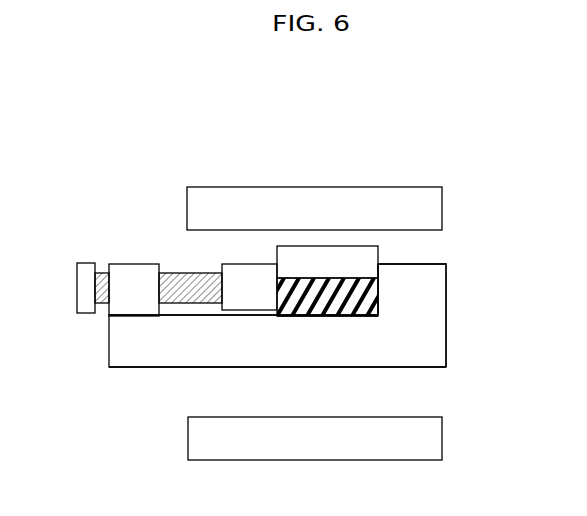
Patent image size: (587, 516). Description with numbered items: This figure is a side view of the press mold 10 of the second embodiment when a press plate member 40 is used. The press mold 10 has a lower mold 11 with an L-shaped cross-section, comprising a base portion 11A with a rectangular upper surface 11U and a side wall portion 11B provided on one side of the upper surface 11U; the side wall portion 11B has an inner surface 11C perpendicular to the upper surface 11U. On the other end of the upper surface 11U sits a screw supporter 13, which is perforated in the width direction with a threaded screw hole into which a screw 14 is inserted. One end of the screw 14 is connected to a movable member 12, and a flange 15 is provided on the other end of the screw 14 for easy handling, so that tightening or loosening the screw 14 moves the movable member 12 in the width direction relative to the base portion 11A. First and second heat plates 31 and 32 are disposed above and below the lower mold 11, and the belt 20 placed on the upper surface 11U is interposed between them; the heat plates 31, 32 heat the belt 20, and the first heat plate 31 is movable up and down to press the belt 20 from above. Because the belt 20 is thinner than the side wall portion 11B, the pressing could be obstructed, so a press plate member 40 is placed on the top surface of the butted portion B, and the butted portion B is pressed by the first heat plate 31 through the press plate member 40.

The press mold 10 is at (470, 158).
The lower mold 11 is at (125, 375).
The base portion 11A is at (195, 343).
The side wall portion 11B is at (413, 283).
The inner surface 11C is at (372, 305).
The upper surface 11U is at (188, 315).
The movable member 12 is at (248, 288).
The screw supporter 13 is at (137, 290).
The screw 14 is at (188, 270).
The flange 15 is at (87, 287).
The belt 20 is at (338, 300).
The first heat plate 31 is at (413, 208).
The second heat plate 32 is at (415, 439).
The press plate member 40 is at (377, 255).
The butted portion B is at (317, 318).